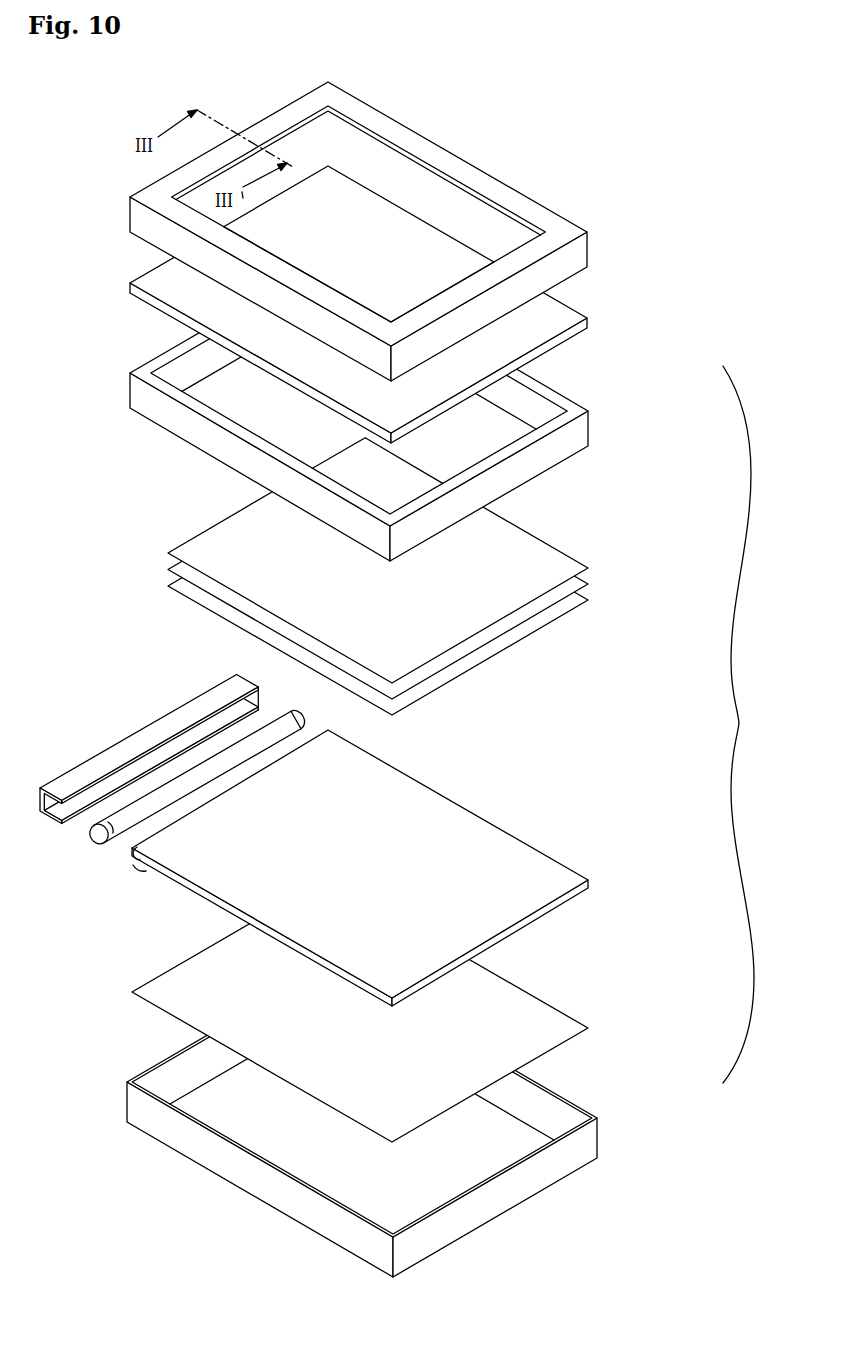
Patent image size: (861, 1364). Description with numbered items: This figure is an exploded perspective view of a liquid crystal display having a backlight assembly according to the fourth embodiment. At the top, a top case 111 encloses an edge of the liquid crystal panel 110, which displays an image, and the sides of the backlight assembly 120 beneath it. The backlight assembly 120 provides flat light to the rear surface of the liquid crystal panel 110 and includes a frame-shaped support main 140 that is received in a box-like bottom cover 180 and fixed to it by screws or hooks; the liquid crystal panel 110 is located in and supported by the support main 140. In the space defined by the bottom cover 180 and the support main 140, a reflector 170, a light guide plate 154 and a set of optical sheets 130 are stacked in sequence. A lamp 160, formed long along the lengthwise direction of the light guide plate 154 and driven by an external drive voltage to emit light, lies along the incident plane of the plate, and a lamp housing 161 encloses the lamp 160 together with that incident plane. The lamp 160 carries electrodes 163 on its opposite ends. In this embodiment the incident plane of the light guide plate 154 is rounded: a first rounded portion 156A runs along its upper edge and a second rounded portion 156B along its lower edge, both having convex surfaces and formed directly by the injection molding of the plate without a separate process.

The top case 111 is at (553, 227).
The liquid crystal panel 110 is at (567, 317).
The support main 140 is at (567, 403).
The optical sheets 130 is at (609, 566).
The backlight assembly 120 is at (753, 724).
The lamp housing 161 is at (83, 772).
The lamp 160 is at (100, 853).
The electrodes 163 is at (294, 716).
The light guide plate 154 is at (568, 878).
The first rounded portion 156A is at (160, 857).
The second rounded portion 156B is at (145, 870).
The reflector 170 is at (523, 1028).
The bottom cover 180 is at (570, 1102).